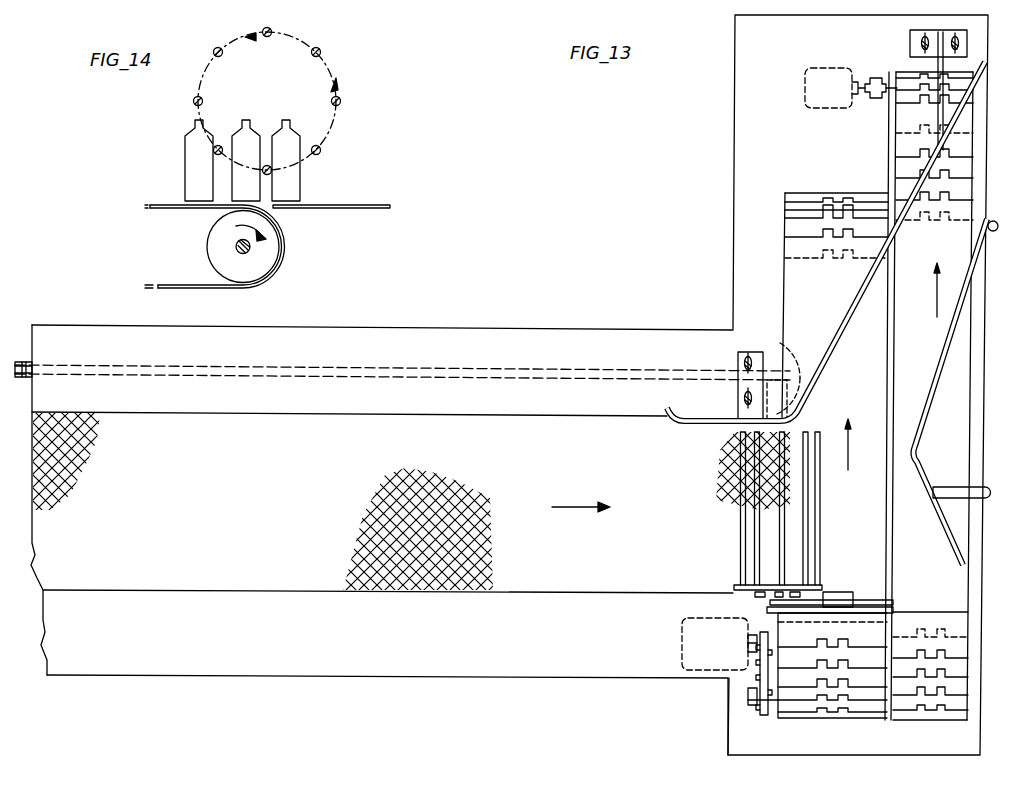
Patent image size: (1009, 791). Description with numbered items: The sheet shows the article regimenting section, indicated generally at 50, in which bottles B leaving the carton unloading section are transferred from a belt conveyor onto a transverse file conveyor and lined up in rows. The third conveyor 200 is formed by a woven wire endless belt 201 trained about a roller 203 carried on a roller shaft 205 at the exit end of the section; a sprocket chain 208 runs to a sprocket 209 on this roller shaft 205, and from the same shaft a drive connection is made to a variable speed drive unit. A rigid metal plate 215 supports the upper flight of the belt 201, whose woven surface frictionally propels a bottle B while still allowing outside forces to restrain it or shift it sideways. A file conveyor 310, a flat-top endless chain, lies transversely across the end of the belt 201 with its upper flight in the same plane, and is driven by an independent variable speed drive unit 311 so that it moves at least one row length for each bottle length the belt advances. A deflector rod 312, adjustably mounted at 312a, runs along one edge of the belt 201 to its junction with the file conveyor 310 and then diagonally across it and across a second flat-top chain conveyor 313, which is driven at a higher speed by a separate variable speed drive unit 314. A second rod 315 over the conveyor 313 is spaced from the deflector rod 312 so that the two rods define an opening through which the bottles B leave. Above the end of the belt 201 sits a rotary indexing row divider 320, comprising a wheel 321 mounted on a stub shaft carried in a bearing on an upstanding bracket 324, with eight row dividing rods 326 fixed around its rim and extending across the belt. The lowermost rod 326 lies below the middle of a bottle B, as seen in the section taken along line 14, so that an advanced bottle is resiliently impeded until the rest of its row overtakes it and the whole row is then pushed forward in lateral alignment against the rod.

In FIG. 13, the section line 14 is at (760, 557).
In FIG. 13, the bottle transfer machine frame 50 is at (683, 303).
In FIG. 13, the third conveyor 200 is at (355, 410).
In FIG. 14, the woven wire endless belt 201 is at (176, 211).
In FIG. 13, the woven wire endless belt 201 is at (525, 464).
In FIG. 14, the roller 203 is at (207, 248).
In FIG. 13, the roller 203 is at (803, 415).
In FIG. 14, the roller shaft 205 is at (251, 247).
In FIG. 13, the roller shaft 205 is at (798, 366).
In FIG. 13, the sprocket chain 208 is at (590, 369).
In FIG. 13, the sprocket 209 is at (738, 386).
In FIG. 13, the rigid metal plate 215 is at (513, 405).
In FIG. 14, the file conveyor 310 is at (370, 209).
In FIG. 13, the file conveyor 310 is at (873, 350).
In FIG. 13, the variable speed drive unit 311 is at (684, 660).
In FIG. 13, the deflector rod 312 is at (851, 300).
In FIG. 13, the adjustable mounting 312a is at (910, 45).
In FIG. 13, the second flat-top chain conveyor 313 is at (930, 340).
In FIG. 13, the variable speed drive unit 314 is at (805, 103).
In FIG. 13, the second rod 315 is at (922, 421).
In FIG. 13, the rotary indexing row divider 320 is at (728, 573).
In FIG. 13, the wheel 321 is at (733, 589).
In FIG. 13, the bracket 324 is at (770, 607).
In FIG. 14, the row dividing rods 326 is at (321, 52).
In FIG. 13, the row dividing rods 326 is at (808, 501).
In FIG. 14, the bottle B is at (296, 187).